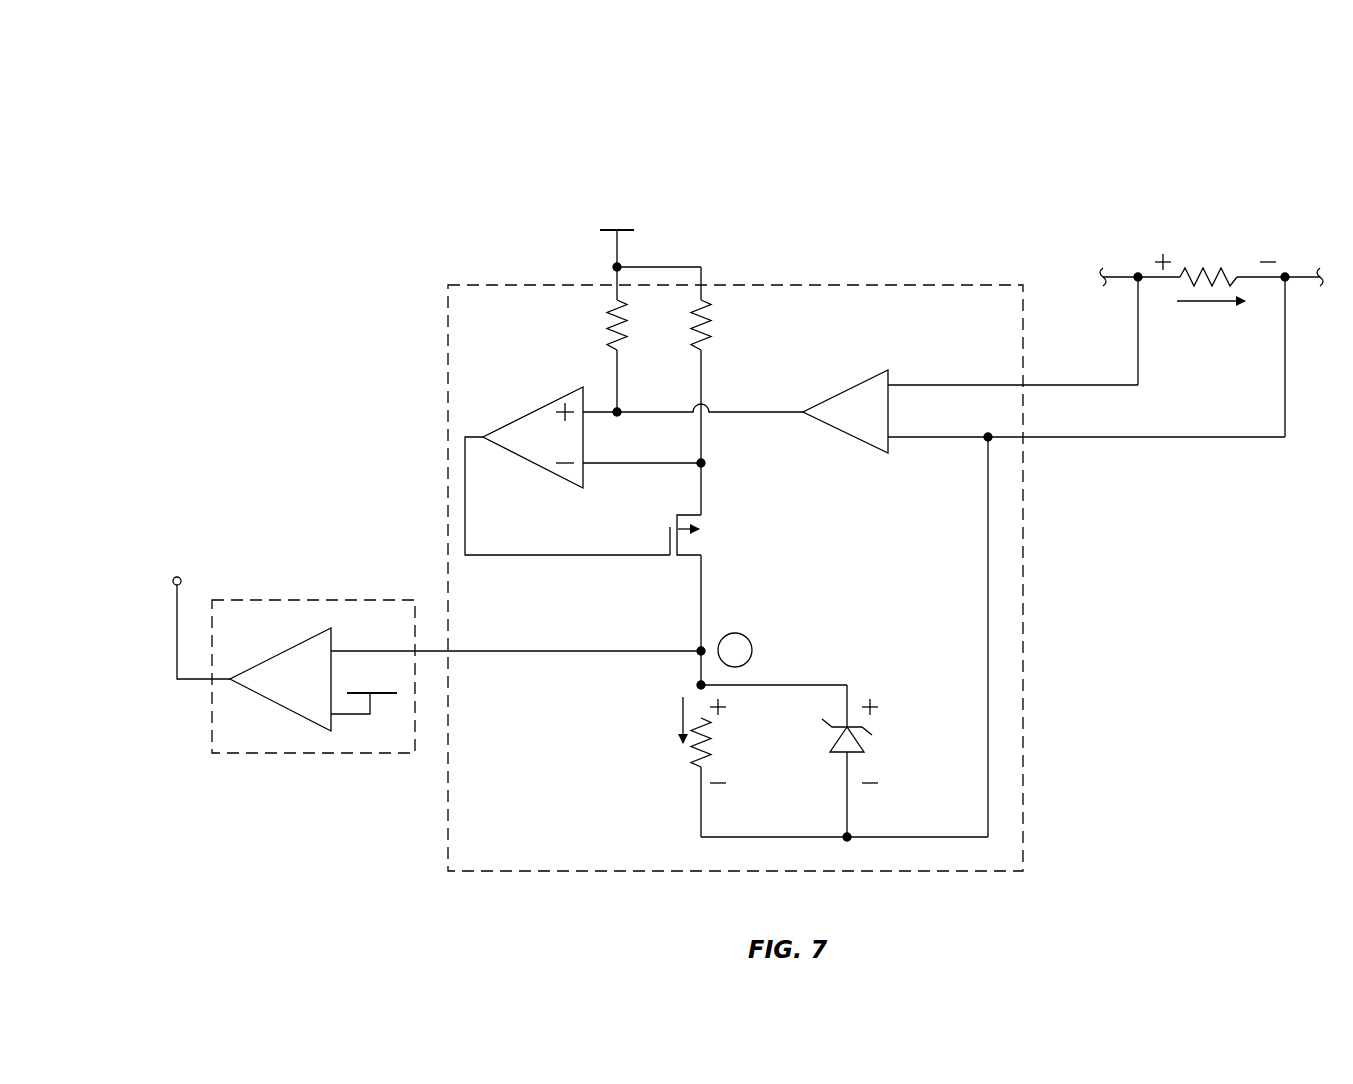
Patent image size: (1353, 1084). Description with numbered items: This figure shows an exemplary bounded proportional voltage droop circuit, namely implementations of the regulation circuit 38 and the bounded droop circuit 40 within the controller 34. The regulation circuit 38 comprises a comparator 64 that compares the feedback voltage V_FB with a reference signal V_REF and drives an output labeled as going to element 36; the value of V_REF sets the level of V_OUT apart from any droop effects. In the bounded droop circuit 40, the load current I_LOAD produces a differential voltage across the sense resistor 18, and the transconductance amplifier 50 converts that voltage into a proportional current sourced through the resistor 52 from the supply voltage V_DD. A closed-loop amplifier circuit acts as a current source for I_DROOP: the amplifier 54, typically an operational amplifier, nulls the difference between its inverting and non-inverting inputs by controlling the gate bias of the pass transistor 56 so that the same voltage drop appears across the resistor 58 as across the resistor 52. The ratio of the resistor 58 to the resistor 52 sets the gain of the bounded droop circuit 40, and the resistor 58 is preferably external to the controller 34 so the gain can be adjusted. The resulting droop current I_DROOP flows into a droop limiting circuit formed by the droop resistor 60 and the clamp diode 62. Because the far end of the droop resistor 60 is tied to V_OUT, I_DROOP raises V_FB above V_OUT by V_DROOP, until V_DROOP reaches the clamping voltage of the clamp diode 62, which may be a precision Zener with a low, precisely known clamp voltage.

The controller 34 is at (734, 490).
The bounded droop circuit 40 is at (1024, 650).
The regulation circuit 38 is at (277, 756).
The output stage / PWM controller 36 is at (208, 573).
The comparator 64 is at (332, 638).
The sense resistor 18 is at (1215, 265).
The transconductance amplifier 50 is at (860, 384).
The resistor 52 is at (628, 337).
The resistor 58 is at (712, 337).
The amplifier 54 is at (554, 480).
The pass transistor 56 is at (672, 521).
The droop resistor 60 is at (690, 760).
The clamp diode 62 is at (840, 755).